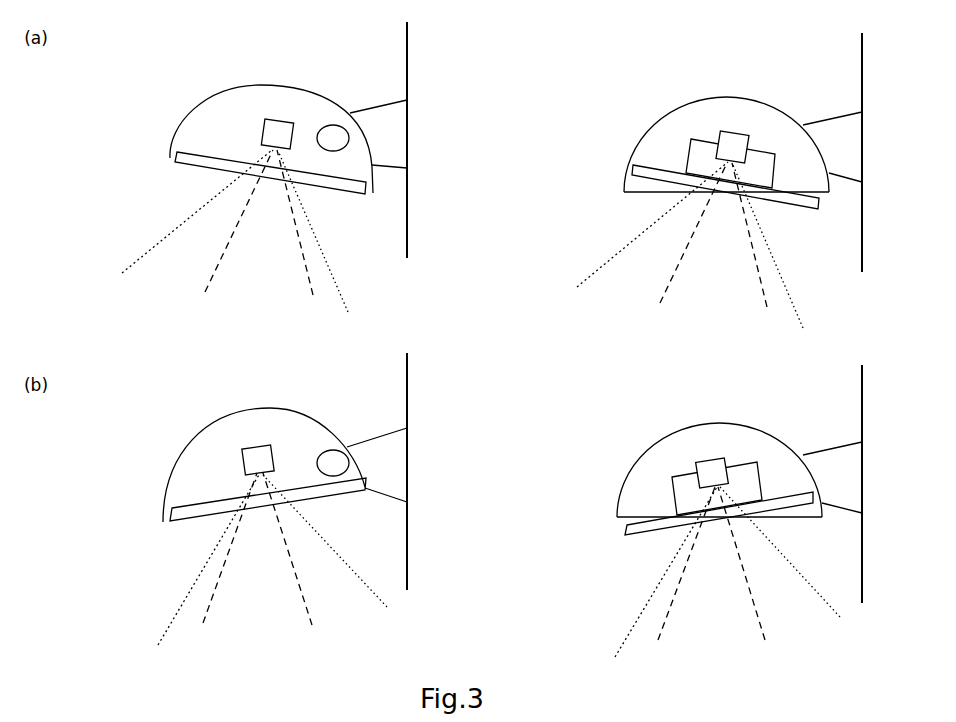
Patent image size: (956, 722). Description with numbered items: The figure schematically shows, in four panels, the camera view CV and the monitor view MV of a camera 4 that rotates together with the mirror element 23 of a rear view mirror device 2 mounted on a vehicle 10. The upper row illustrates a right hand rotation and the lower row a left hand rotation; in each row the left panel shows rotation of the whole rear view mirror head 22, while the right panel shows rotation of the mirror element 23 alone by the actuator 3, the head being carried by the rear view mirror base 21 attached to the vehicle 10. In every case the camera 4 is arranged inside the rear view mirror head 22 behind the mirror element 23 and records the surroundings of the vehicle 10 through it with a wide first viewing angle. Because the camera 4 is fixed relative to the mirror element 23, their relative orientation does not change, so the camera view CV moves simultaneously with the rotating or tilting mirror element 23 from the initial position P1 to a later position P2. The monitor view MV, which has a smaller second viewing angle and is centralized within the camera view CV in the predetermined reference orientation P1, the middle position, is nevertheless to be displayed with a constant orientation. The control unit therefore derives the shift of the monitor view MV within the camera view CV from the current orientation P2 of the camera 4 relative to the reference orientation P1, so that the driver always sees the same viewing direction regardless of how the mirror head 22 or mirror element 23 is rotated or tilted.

The rear view mirror device 2 is at (443, 278).
The rear view mirror head 22 is at (443, 288).
The mirror element 23 is at (459, 375).
The actuator 3 is at (536, 273).
The camera 4 is at (495, 248).
The rear view mirror base 21 is at (599, 263).
The vehicle 10 is at (666, 312).
The later position P2 is at (375, 417).
The camera view CV is at (375, 417).
The monitor view MV is at (485, 404).
The predetermined reference orientation P1 is at (485, 404).